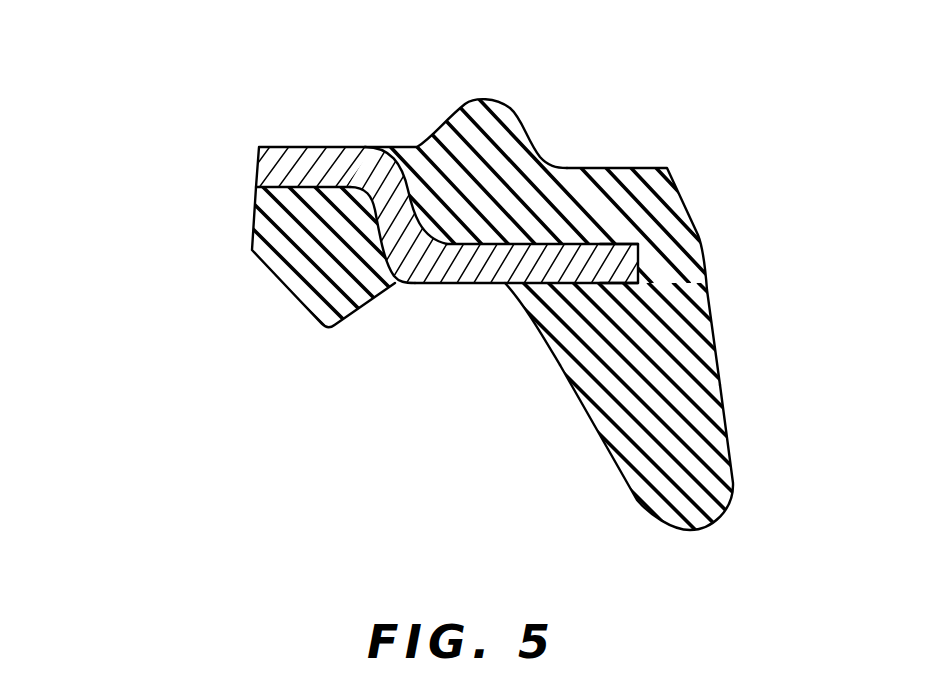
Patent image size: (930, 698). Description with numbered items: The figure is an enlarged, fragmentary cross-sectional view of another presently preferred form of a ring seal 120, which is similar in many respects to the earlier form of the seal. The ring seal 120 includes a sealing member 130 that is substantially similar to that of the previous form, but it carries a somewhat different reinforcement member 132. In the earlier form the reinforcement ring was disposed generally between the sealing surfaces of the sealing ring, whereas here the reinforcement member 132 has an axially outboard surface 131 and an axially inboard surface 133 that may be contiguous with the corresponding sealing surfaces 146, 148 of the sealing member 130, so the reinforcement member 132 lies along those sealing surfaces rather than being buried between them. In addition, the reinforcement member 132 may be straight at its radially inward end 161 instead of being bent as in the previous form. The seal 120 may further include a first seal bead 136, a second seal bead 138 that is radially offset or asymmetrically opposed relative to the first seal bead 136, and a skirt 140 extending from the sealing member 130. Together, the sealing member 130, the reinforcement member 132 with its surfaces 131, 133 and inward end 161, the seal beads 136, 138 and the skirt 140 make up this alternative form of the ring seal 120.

The ring seal 120 is at (167, 147).
The sealing member 130 is at (597, 187).
The axially outboard surface 131 is at (290, 147).
The reinforcement member 132 is at (472, 276).
The axially inboard surface 133 is at (503, 283).
The first seal bead 136 is at (305, 300).
The second seal bead 138 is at (495, 110).
The skirt 140 is at (683, 397).
The sealing surface 146 is at (403, 147).
The sealing surface 148 is at (403, 283).
The radially inward end 161 is at (607, 257).